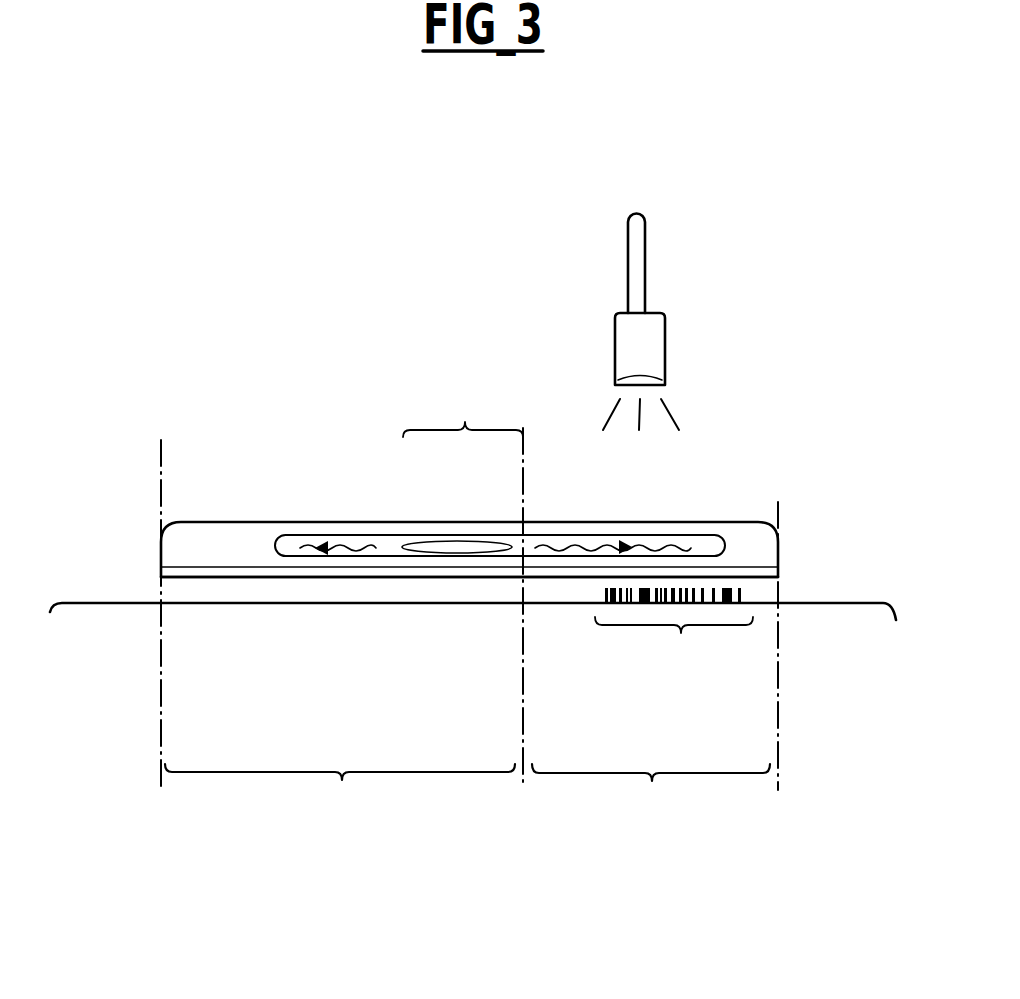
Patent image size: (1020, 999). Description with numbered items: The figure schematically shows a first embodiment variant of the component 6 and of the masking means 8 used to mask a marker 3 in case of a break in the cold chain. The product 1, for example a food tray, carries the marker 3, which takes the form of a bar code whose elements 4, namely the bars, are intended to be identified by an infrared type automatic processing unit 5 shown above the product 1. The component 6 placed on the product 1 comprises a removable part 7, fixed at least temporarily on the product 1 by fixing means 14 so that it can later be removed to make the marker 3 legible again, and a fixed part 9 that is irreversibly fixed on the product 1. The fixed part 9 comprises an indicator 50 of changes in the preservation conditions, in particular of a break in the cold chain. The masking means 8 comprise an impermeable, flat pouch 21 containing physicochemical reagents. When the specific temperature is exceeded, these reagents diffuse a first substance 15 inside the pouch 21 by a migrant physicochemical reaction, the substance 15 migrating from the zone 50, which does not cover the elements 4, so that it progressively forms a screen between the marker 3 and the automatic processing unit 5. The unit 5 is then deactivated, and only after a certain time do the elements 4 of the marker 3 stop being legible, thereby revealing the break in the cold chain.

The product 1 is at (80, 617).
The marker 3 is at (680, 640).
The elements 4 is at (600, 606).
The automatic processing unit 5 is at (650, 262).
The component 6 is at (788, 516).
The part 7 is at (651, 790).
The masking means 8 is at (175, 540).
The fixed part 9 is at (340, 790).
The fixing means 14 is at (160, 572).
The first substance 15 is at (322, 546).
The impermeable flat pouch 21 is at (708, 537).
The indicator 50 is at (463, 412).